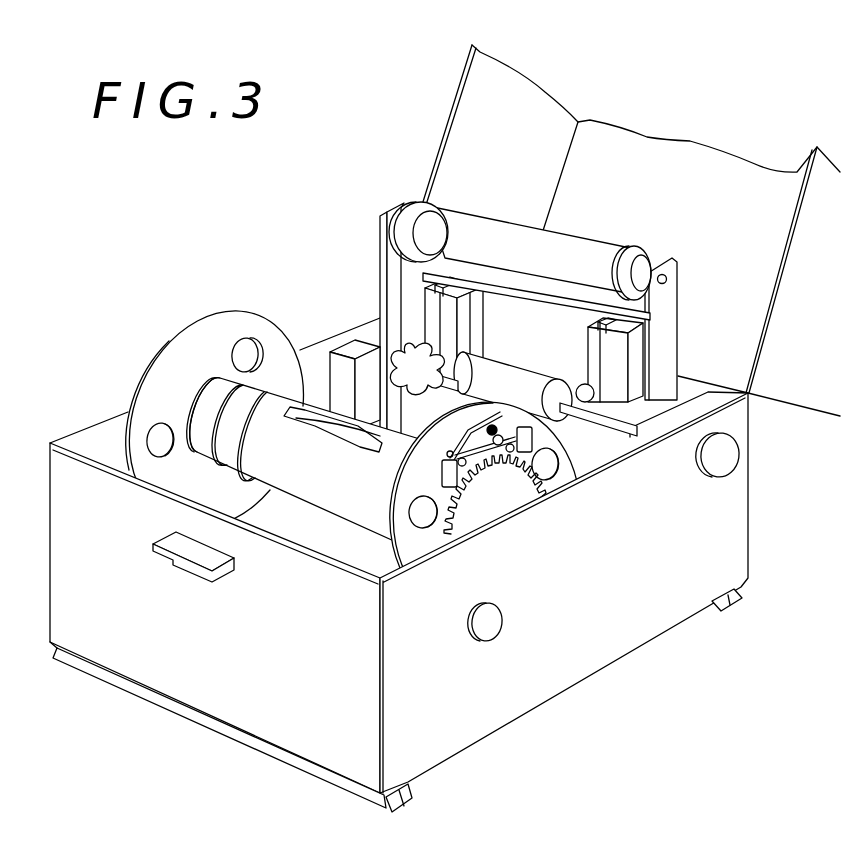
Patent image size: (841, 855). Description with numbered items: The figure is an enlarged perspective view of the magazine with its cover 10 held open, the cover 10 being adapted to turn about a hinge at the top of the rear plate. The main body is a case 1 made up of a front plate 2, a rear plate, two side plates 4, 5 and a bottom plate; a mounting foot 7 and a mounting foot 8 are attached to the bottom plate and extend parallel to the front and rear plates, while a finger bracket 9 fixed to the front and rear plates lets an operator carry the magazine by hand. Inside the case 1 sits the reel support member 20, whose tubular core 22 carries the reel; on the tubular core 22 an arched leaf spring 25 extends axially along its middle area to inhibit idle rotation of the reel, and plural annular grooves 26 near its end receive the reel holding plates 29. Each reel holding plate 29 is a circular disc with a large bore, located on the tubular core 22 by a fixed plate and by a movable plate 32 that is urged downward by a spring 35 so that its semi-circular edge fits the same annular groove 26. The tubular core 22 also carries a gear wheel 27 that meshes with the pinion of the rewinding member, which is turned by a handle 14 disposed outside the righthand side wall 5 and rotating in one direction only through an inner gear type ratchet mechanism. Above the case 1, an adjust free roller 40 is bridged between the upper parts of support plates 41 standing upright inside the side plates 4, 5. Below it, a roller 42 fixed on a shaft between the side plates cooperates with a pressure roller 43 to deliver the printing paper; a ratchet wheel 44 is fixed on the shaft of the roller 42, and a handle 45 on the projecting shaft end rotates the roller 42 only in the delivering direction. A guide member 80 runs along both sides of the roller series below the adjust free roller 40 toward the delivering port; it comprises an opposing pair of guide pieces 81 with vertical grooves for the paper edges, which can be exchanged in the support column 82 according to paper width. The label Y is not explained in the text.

The case 1 is at (445, 438).
The front plate 2 is at (200, 697).
The side plate 4 is at (340, 345).
The righthand side wall 5 is at (616, 652).
The mounting foot 7 is at (407, 787).
The mounting foot 8 is at (727, 611).
The finger bracket 9 is at (195, 553).
The cover 10 is at (650, 132).
The handle 14 is at (492, 627).
The reel support member 20 is at (364, 432).
The tubular core 22 is at (336, 494).
The leaf spring 25 is at (333, 432).
The annular groove 26 is at (218, 425).
The gear wheel 27 is at (493, 507).
The reel holding plate 29 is at (170, 355).
The movable plate 32 is at (443, 466).
The spring 35 is at (508, 425).
The adjust free roller 40 is at (593, 248).
The support plate 41 is at (379, 244).
The roller 42 is at (572, 412).
The pressure roller 43 is at (547, 349).
The ratchet wheel 44 is at (422, 385).
The handle 45 is at (733, 460).
The guide member 80 is at (497, 278).
The guide piece 81 is at (450, 285).
The support column 82 is at (444, 338).
The direction Y is at (307, 206).